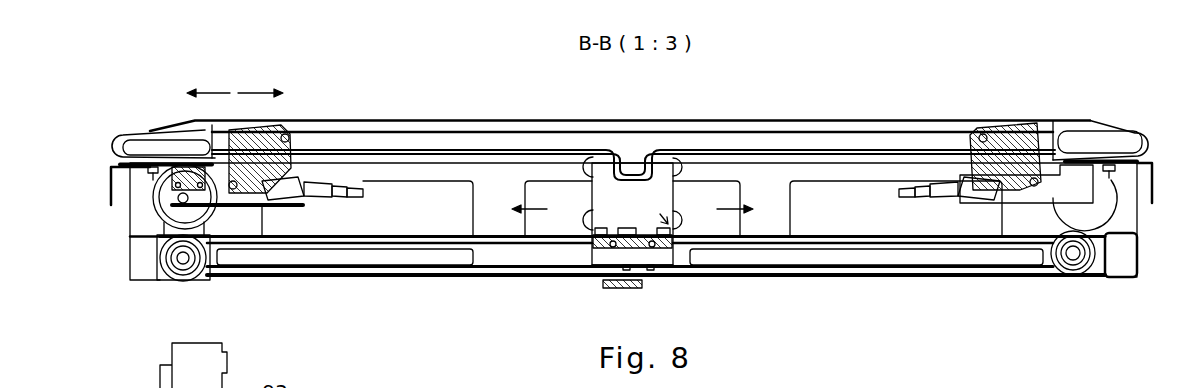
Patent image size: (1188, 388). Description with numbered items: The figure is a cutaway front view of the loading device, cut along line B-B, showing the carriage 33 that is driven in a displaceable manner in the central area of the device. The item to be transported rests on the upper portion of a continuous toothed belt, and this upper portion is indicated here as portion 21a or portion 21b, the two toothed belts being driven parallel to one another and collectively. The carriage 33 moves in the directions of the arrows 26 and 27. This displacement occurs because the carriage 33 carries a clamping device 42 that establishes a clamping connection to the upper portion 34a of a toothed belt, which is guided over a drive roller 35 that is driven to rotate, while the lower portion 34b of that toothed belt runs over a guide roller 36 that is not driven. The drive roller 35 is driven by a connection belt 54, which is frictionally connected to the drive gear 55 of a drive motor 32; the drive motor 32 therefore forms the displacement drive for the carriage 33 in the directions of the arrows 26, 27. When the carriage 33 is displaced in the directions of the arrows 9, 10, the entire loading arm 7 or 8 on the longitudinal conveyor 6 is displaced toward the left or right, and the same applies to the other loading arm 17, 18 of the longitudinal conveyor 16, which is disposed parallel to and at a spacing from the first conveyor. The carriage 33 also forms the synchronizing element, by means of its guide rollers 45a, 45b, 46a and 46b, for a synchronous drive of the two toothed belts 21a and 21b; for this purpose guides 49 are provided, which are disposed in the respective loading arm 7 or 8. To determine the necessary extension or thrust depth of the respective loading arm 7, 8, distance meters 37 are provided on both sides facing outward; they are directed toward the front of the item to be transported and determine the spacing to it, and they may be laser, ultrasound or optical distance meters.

The upper profile 6 is at (620, 96).
The longitudinal conveyor 16 is at (413, 136).
The loading arm 7 is at (158, 110).
The loading arm 17 is at (143, 148).
The loading arm 8 is at (1100, 110).
The loading arm 18 is at (1087, 145).
The arrow 9 is at (218, 93).
The arrow 10 is at (240, 93).
The upper portion of toothed belt 21a is at (633, 119).
The upper portion of toothed belt 21b is at (840, 123).
The arrow 26 is at (523, 252).
The arrow 27 is at (740, 252).
The drive motor 32 is at (153, 208).
The carriage 33 is at (670, 250).
The upper portion of toothed belt 34a is at (450, 236).
The lower portion of toothed belt 34b is at (566, 268).
The drive roller 35 is at (172, 277).
The guide roller 36 is at (1075, 263).
The distance meter 37 is at (257, 150).
The clamping device 42 is at (630, 250).
The guide roller 45a is at (592, 160).
The guide roller 45b is at (590, 212).
The guide roller 46a is at (665, 165).
The guide roller 46b is at (690, 207).
The guide 49 is at (327, 260).
The connection belt 54 is at (215, 232).
The drive gear 55 is at (167, 202).